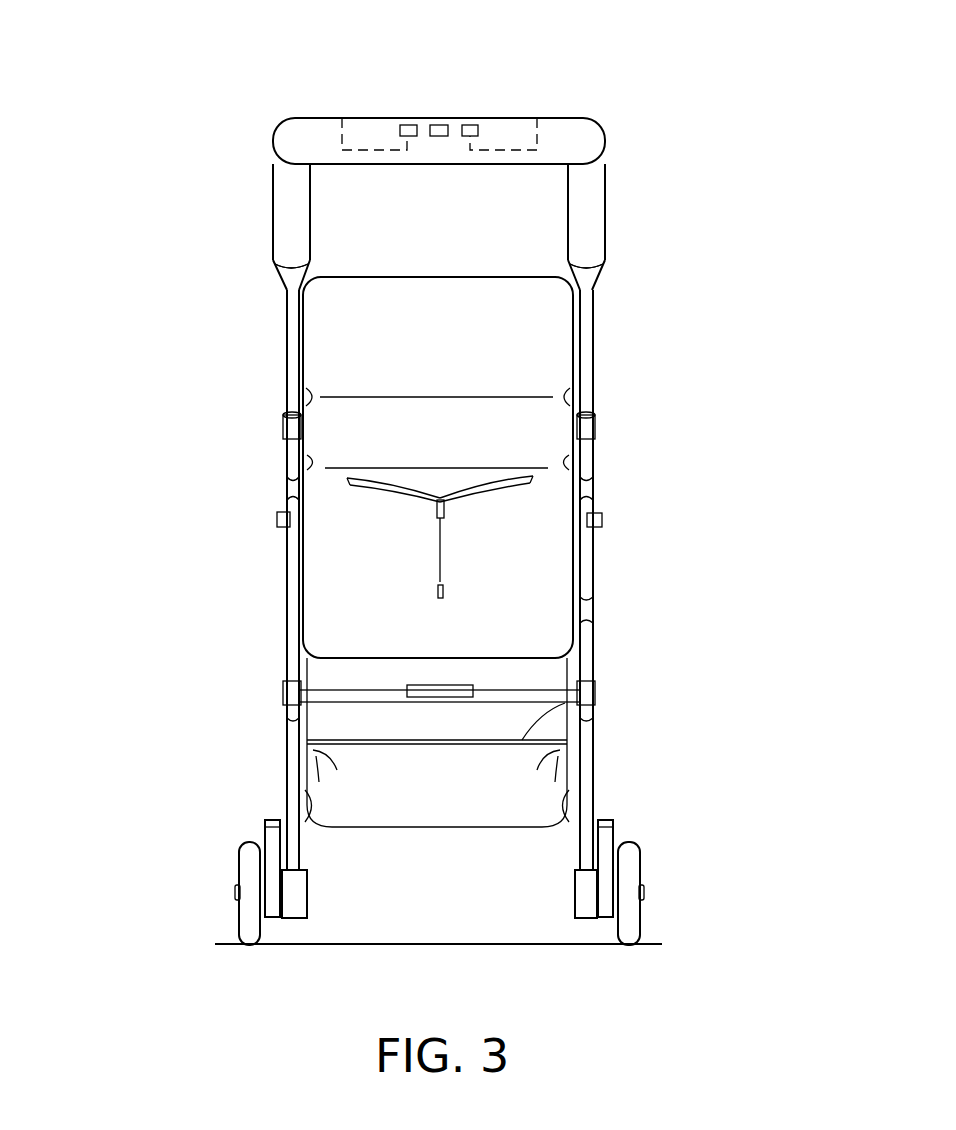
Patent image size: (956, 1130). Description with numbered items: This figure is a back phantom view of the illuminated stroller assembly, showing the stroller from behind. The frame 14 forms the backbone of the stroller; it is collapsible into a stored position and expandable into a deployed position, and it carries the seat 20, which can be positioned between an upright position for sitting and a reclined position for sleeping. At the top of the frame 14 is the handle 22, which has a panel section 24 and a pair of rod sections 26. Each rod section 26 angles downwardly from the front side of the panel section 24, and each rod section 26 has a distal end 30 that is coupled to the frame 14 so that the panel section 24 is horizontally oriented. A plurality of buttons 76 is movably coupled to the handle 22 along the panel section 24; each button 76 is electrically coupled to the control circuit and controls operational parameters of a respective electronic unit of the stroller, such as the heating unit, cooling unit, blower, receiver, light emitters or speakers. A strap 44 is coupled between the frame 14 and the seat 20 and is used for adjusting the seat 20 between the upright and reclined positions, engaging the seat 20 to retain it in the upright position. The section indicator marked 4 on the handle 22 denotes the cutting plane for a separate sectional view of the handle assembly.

The frame 14 is at (288, 355).
The seat 20 is at (540, 553).
The handle 22 is at (285, 118).
The panel section 24 is at (420, 112).
The rod sections 26 is at (270, 157).
The distal end 30 is at (287, 292).
The strap 44 is at (442, 572).
The buttons 76 is at (405, 125).
The section line 4 is at (625, 166).